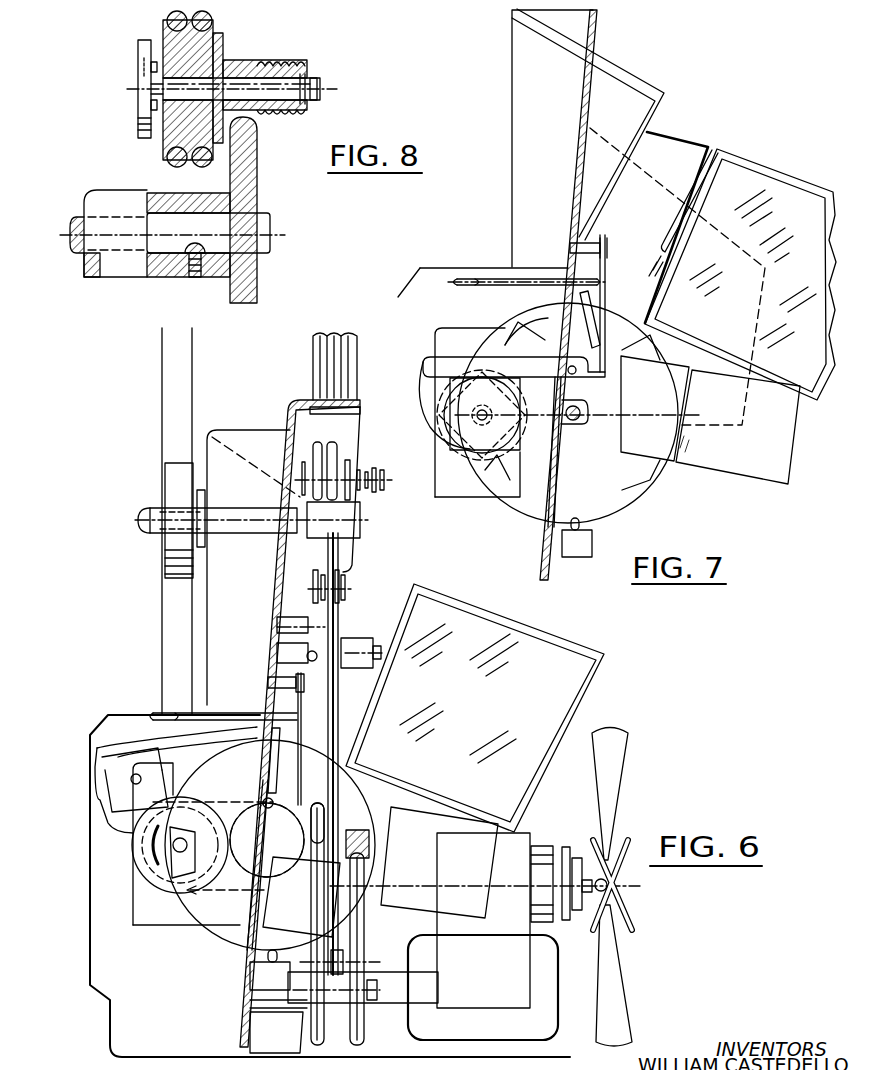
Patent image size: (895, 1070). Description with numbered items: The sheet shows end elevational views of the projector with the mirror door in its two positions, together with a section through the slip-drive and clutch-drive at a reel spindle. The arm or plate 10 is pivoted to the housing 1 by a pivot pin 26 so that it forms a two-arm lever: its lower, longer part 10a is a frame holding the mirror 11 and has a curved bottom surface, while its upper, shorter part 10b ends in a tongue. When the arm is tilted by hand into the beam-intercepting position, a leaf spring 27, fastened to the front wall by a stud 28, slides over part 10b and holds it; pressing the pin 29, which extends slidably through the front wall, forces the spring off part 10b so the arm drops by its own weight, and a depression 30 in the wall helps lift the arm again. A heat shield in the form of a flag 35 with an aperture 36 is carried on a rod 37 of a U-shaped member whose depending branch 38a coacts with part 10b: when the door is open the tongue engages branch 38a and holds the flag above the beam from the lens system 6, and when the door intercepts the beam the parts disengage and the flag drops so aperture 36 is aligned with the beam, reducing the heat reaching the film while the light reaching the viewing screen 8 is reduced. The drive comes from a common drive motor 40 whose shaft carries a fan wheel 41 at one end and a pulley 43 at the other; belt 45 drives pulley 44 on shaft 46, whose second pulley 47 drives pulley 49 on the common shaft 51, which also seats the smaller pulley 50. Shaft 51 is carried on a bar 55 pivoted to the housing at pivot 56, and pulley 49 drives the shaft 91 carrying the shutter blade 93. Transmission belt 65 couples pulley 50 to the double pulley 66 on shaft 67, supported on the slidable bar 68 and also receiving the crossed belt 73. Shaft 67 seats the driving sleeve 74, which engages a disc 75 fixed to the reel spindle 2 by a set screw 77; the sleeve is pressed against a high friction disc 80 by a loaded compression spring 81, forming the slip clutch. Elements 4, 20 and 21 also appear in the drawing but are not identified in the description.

In FIG. 7, the housing 1 is at (597, 39).
In FIG. 6, the housing 1 is at (290, 406).
In FIG. 8, the reel spindle 2 is at (76, 256).
In FIG. 6, the reel spindle 2 is at (151, 511).
In FIG. 6, the support bar 4 is at (161, 428).
In FIG. 7, the lens system 6 is at (498, 458).
In FIG. 6, the lens system 6 is at (157, 880).
In FIG. 7, the viewing screen 8 is at (657, 125).
In FIG. 7, the arm or plate 10 is at (462, 370).
In FIG. 6, the arm or plate 10 is at (249, 889).
In FIG. 7, the lower or longer part of arm 10a is at (427, 371).
In FIG. 6, the lower or longer part of arm 10a is at (240, 947).
In FIG. 7, the upper and shorter part of arm 10b is at (582, 380).
In FIG. 6, the upper and shorter part of arm 10b is at (275, 814).
In FIG. 6, the mirror 11 is at (240, 912).
In FIG. 7, the plate 20 is at (745, 470).
In FIG. 6, the plate 20 is at (468, 916).
In FIG. 7, the mirror 21 is at (740, 167).
In FIG. 6, the mirror 21 is at (572, 689).
In FIG. 6, the pivot pin 26 is at (263, 801).
In FIG. 7, the leaf spring 27 is at (606, 264).
In FIG. 6, the leaf spring 27 is at (299, 716).
In FIG. 7, the stud 28 is at (597, 237).
In FIG. 6, the stud 28 is at (270, 683).
In FIG. 7, the pin 29 is at (497, 279).
In FIG. 6, the pin 29 is at (155, 712).
In FIG. 7, the depression 30 is at (545, 528).
In FIG. 6, the depression 30 is at (243, 951).
In FIG. 7, the flag 35 is at (436, 429).
In FIG. 6, the flag 35 is at (108, 762).
In FIG. 7, the aperture 36 is at (477, 427).
In FIG. 6, the aperture 36 is at (130, 779).
In FIG. 7, the rod 37 is at (528, 311).
In FIG. 6, the rod 37 is at (170, 745).
In FIG. 7, the depending branch 38a is at (598, 304).
In FIG. 6, the depending branch 38a is at (287, 750).
In FIG. 6, the drive motor 40 is at (558, 983).
In FIG. 6, the fan wheel 41 is at (613, 775).
In FIG. 6, the pulley 43 is at (363, 911).
In FIG. 6, the pulley 44 is at (366, 1020).
In FIG. 6, the belt 45 is at (363, 934).
In FIG. 6, the shaft 46 is at (335, 1008).
In FIG. 6, the second pulley 47 is at (307, 1025).
In FIG. 6, the pulley 49 is at (324, 816).
In FIG. 6, the smaller pulley 50 is at (323, 873).
In FIG. 6, the common shaft 51 is at (372, 844).
In FIG. 6, the bar 55 is at (340, 701).
In FIG. 6, the pivot 56 is at (352, 638).
In FIG. 8, the transmission belt 65 is at (210, 17).
In FIG. 8, the pulley 66 is at (165, 36).
In FIG. 8, the shaft 67 is at (303, 78).
In FIG. 8, the bar 68 is at (140, 111).
In FIG. 8, the transmission belt 73 is at (170, 165).
In FIG. 8, the driving sleeve 74 is at (250, 62).
In FIG. 8, the disc 75 is at (252, 174).
In FIG. 8, the set screw 77 is at (201, 264).
In FIG. 8, the high friction disc 80 is at (223, 49).
In FIG. 8, the loaded compression spring 81 is at (281, 117).
In FIG. 7, the shaft 91 is at (575, 425).
In FIG. 7, the shutter blade 93 is at (610, 520).
In FIG. 6, the shutter blade 93 is at (196, 923).